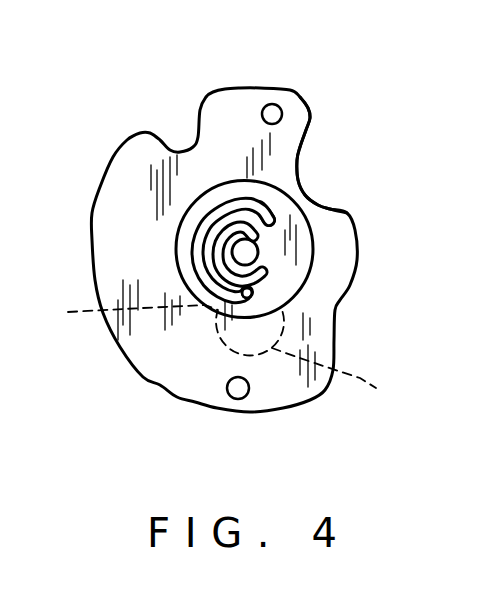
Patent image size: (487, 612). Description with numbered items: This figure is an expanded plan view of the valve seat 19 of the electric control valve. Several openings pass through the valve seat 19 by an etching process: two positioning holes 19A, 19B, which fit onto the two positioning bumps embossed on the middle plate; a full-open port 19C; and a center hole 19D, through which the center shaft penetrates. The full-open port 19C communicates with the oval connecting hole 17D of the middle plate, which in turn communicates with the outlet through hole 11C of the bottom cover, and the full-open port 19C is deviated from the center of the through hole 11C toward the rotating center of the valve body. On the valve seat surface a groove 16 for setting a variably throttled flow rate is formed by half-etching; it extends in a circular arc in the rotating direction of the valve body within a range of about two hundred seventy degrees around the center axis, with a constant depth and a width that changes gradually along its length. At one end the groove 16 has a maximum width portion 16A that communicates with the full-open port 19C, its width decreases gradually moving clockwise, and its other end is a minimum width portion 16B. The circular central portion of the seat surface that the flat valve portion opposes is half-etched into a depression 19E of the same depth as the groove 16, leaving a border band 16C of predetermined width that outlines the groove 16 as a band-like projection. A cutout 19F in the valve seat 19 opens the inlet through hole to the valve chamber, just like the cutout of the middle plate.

The valve seat 19 is at (130, 182).
The positioning hole 19A is at (277, 104).
The positioning hole 19B is at (234, 394).
The full-open port 19C is at (246, 300).
The center hole 19D is at (258, 256).
The depression 19E is at (287, 287).
The cutout 19F is at (301, 153).
The groove 16 is at (217, 245).
The maximum width portion 16A is at (243, 297).
The minimum width portion 16B is at (271, 220).
The border band 16C is at (217, 203).
The connecting hole 17D is at (150, 324).
The through hole 11C is at (348, 380).